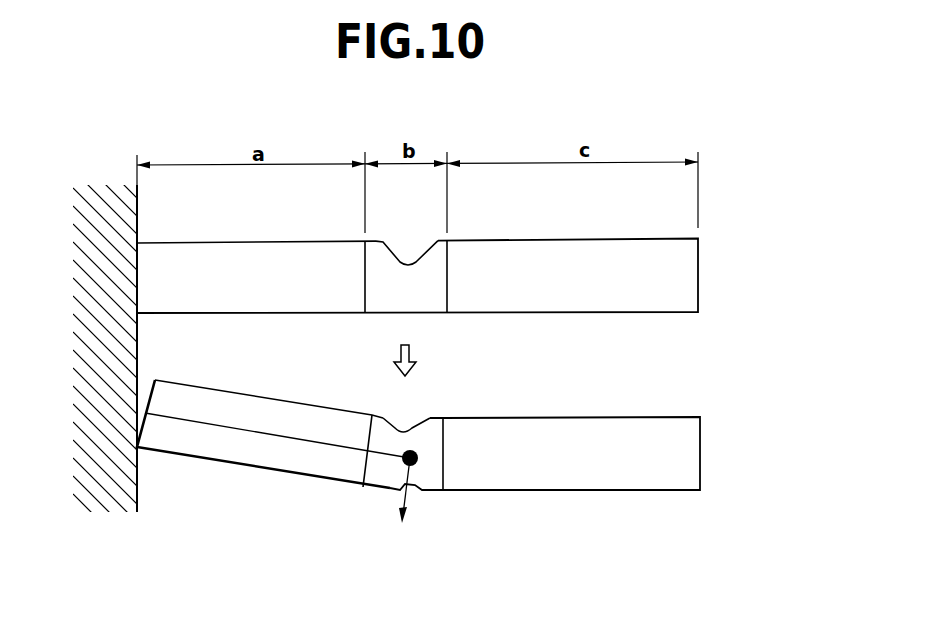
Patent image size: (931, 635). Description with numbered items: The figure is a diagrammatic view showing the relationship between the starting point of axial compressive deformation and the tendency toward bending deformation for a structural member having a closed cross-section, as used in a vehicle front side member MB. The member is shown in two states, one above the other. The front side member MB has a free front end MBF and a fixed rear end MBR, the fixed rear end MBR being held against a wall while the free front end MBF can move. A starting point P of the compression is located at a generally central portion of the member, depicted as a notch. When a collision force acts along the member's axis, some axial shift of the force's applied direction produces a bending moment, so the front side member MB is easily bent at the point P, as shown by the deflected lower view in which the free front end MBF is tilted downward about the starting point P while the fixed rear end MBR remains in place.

The front side member MB is at (568, 318).
The free front end MBF is at (137, 268).
The fixed rear end MBR is at (698, 277).
The starting point of the compression P is at (408, 258).